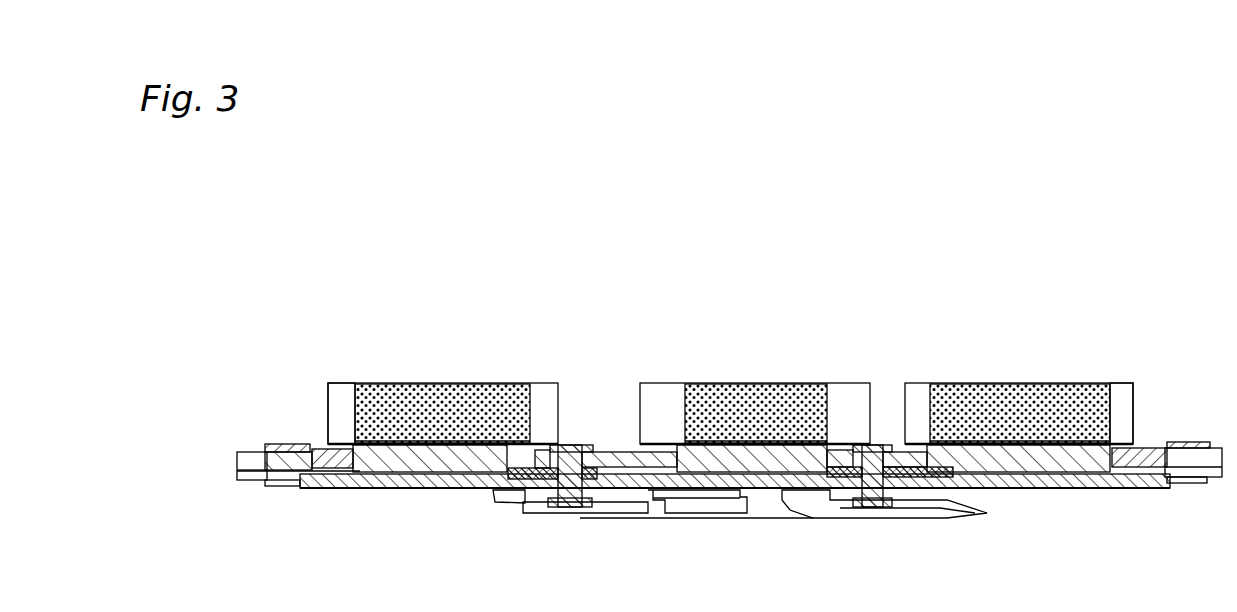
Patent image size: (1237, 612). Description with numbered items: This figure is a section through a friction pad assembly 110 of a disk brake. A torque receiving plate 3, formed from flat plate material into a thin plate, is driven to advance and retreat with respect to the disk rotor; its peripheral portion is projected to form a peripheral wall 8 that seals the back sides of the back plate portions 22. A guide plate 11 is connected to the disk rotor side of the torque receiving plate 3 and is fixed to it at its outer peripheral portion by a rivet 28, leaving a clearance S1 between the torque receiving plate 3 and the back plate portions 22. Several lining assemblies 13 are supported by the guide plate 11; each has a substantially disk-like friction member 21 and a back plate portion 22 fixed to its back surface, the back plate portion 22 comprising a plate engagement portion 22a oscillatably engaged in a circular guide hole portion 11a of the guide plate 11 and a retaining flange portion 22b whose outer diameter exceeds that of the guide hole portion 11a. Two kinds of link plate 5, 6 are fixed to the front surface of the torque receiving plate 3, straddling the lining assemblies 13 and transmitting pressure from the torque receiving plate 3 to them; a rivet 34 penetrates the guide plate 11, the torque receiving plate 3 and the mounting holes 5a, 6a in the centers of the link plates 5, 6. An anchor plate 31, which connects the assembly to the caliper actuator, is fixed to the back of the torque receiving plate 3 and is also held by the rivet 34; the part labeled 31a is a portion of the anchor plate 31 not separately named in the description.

The friction pad assembly 110 is at (1124, 308).
The torque receiving plate 3 is at (388, 492).
The link plate 5 is at (922, 490).
The mounting hole 5a is at (845, 467).
The link plate 6 is at (524, 490).
The mounting hole 6a is at (568, 448).
The peripheral wall 8 is at (297, 488).
The guide plate 11 is at (236, 449).
The guide hole portion 11a is at (515, 443).
The lining assembly 13 is at (432, 382).
The friction member 21 is at (406, 390).
The back plate portion 22 is at (487, 457).
The plate engagement portion 22a is at (341, 383).
The retaining flange portion 22b is at (330, 448).
The rivet 28 is at (272, 487).
The anchor plate 31 is at (788, 513).
The connector contact 31a is at (571, 506).
The rivet 34 is at (579, 445).
The clearance S1 is at (327, 488).